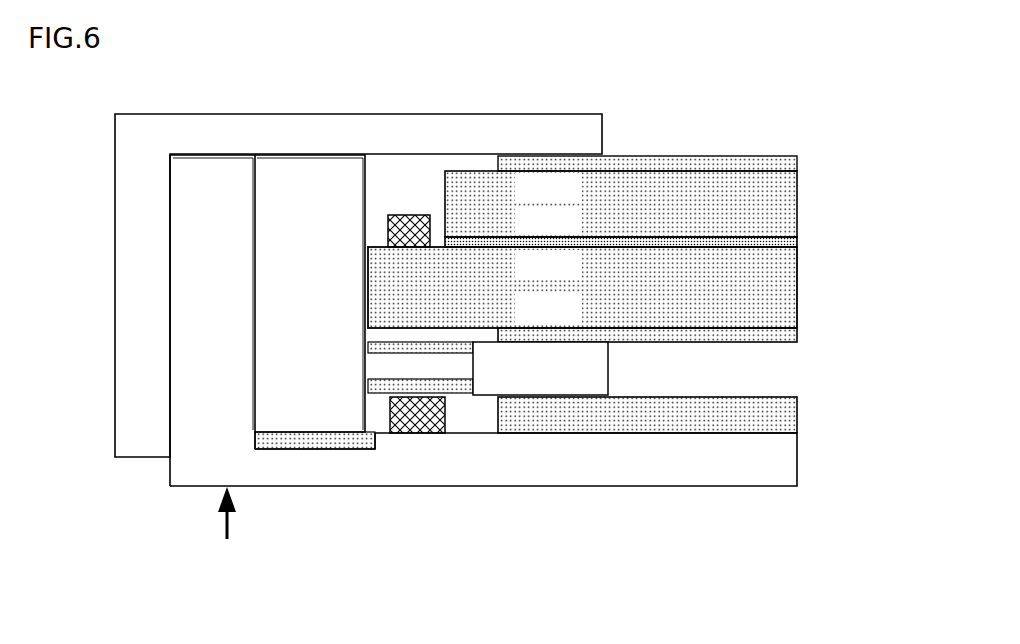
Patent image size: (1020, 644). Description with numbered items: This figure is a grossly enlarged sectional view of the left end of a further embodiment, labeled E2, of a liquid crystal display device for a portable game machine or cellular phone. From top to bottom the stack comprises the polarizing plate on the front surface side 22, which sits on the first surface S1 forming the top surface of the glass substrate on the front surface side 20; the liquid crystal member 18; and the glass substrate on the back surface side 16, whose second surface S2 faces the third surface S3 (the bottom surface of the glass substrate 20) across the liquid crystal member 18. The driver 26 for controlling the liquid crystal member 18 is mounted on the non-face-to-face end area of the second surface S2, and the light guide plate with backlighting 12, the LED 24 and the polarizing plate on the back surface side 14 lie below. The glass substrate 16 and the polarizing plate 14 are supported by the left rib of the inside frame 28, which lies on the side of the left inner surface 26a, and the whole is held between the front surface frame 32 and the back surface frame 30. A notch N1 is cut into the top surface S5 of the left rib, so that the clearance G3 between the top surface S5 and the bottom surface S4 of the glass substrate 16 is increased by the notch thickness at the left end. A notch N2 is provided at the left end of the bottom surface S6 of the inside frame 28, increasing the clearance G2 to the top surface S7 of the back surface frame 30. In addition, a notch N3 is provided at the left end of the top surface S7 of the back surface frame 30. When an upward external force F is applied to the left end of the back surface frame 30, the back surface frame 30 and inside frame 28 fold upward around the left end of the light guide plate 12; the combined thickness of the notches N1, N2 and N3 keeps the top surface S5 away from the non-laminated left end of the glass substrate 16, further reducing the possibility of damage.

The light guide plate with backlighting 12 is at (797, 407).
The polarizing plate on the back surface side 14 is at (797, 335).
The glass substrate on the back surface side 16 is at (797, 283).
The liquid crystal member 18 is at (797, 240).
The glass substrate on the front surface side 20 is at (797, 215).
The polarizing plate on the front surface side 22 is at (797, 160).
The LED 24 is at (397, 434).
The driver 26 is at (403, 215).
The left inner surface 26a is at (608, 362).
The inside frame 28 is at (312, 158).
The back surface frame 30 is at (693, 487).
The front surface frame 32 is at (228, 114).
The electrochemical element (second embodiment) E2 is at (705, 87).
The upward external force F is at (227, 530).
The clearance G2 is at (377, 424).
The clearance G3 is at (417, 326).
The notch N1 is at (478, 356).
The notch N2 is at (458, 390).
The notch N3 is at (333, 452).
The first surface S1 is at (530, 177).
The second surface S2 is at (530, 259).
The third surface S3 is at (530, 224).
The bottom surface S4 is at (530, 315).
The top surface S5 is at (530, 349).
The bottom surface S6 is at (530, 386).
The top surface S7 is at (528, 442).